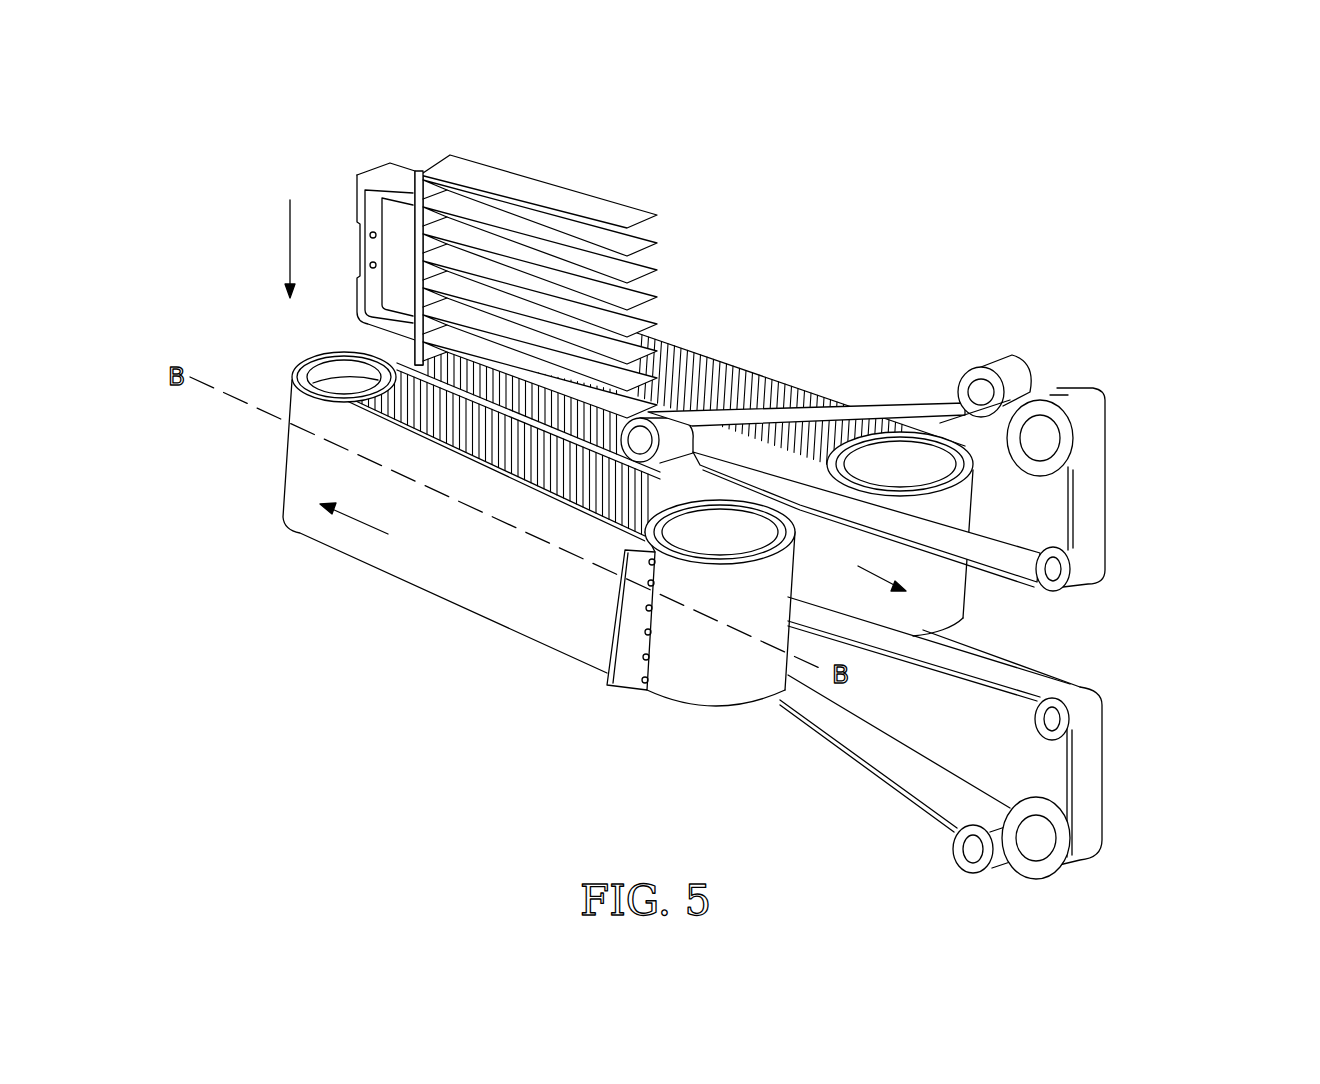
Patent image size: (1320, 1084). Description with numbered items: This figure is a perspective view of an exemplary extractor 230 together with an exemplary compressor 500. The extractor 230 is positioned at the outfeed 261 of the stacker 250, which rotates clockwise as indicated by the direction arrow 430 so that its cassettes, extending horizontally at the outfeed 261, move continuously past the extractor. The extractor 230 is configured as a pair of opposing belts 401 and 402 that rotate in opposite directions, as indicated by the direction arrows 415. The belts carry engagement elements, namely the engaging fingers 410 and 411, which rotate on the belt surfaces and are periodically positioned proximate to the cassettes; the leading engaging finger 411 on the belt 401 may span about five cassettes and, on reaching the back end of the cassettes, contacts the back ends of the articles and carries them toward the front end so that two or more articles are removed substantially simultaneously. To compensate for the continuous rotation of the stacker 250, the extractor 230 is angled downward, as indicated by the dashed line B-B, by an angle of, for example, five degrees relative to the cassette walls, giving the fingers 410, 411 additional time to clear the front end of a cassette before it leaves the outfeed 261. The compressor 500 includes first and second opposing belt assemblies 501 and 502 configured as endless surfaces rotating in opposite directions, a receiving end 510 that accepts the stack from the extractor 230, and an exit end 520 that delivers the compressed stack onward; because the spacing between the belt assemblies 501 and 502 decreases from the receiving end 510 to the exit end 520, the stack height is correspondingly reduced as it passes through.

The stacker 250 is at (405, 148).
The direction arrow 430 is at (268, 249).
The outfeed 261 is at (660, 385).
The belt 402 is at (747, 370).
The leading engaging finger 411 is at (1048, 402).
The first belt assembly 501 is at (1060, 466).
The compressor 500 is at (1160, 553).
The direction arrows 415 is at (613, 547).
The extractor 230 is at (230, 557).
The belt 401 is at (485, 587).
The receiving end 510 is at (687, 460).
The engaging finger 410 is at (625, 668).
The exit end 520 is at (1085, 633).
The second belt assembly 502 is at (1085, 781).